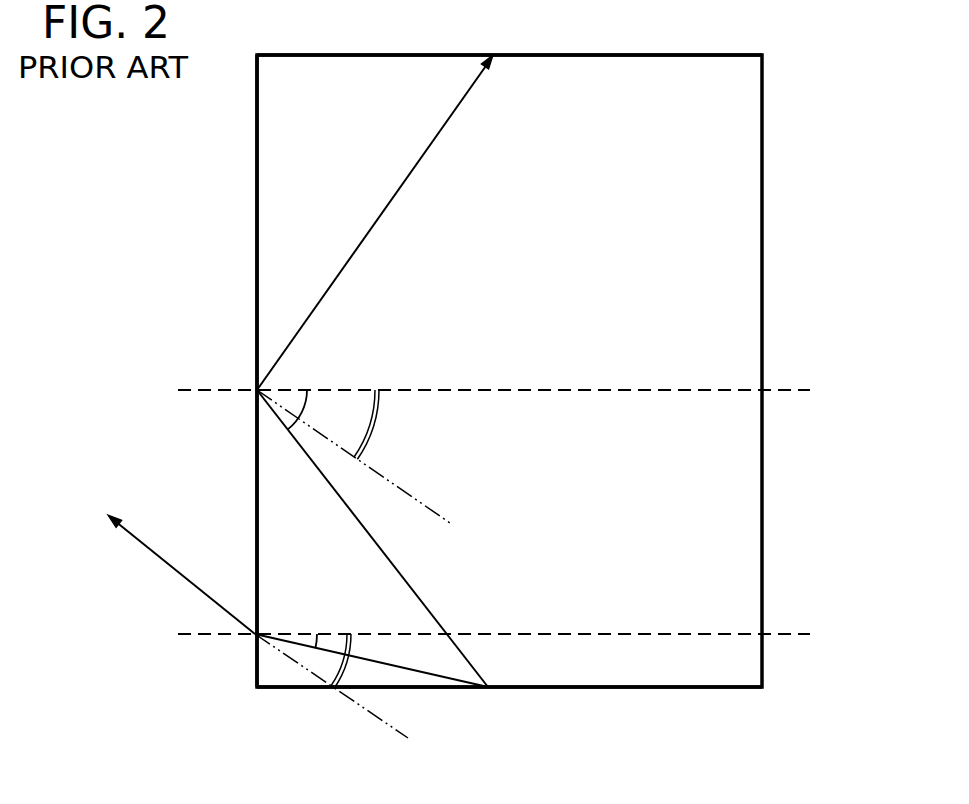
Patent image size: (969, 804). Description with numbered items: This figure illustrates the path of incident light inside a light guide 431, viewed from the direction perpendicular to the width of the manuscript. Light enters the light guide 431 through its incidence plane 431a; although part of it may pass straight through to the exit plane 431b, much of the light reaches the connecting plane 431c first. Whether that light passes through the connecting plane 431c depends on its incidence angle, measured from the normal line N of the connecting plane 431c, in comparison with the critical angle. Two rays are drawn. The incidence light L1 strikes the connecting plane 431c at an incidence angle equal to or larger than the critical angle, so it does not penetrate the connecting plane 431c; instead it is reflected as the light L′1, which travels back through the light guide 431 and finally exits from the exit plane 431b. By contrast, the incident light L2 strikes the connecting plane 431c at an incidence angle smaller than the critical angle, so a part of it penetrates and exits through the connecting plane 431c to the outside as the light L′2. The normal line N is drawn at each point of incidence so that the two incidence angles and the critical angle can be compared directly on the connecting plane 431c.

The light guide 431 is at (785, 172).
The incidence plane 431a is at (713, 688).
The exit plane 431b is at (712, 54).
The connecting plane 431c is at (256, 206).
The normal line N is at (507, 513).
The reflected light L′1 is at (403, 183).
The incidence light L1 is at (342, 500).
The incident light L2 is at (437, 676).
The penetrating light L′2 is at (178, 572).